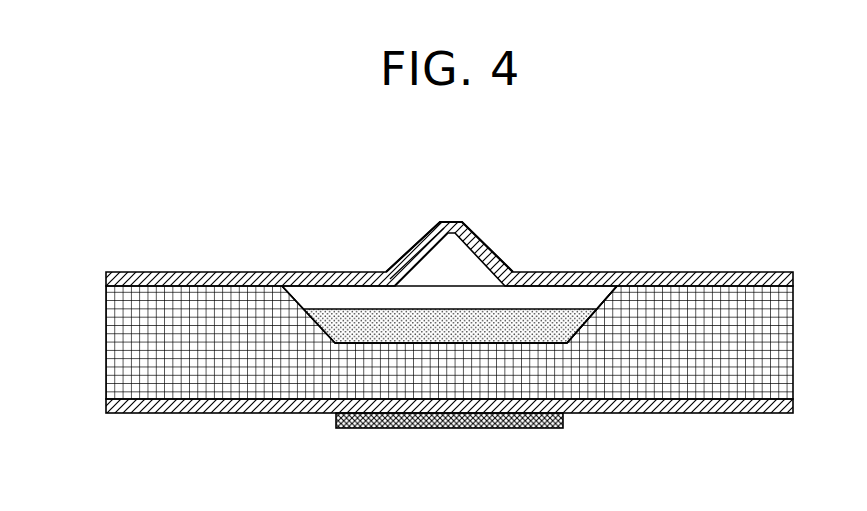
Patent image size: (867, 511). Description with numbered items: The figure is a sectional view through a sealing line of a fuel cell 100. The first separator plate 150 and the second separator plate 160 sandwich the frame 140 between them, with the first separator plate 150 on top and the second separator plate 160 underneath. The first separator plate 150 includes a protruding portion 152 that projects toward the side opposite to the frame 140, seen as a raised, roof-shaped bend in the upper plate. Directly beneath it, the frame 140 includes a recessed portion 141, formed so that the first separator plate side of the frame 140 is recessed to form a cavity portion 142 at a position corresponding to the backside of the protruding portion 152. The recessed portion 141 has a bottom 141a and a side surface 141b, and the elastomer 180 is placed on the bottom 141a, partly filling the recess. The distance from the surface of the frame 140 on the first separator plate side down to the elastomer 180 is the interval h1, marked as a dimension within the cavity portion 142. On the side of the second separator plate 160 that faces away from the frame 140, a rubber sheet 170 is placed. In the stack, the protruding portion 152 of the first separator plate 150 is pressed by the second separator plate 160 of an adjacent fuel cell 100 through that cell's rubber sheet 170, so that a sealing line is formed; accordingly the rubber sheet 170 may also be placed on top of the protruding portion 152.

The fuel cell 100 is at (780, 212).
The frame 140 is at (793, 307).
The recessed portion 141 is at (655, 213).
The bottom 141a is at (531, 343).
The side surface 141b is at (600, 297).
The cavity portion 142 is at (496, 307).
The first separator plate 150 is at (757, 273).
The protruding portion 152 is at (477, 233).
The second separator plate 160 is at (762, 413).
The rubber sheet 170 is at (357, 428).
The elastomer 180 is at (340, 322).
The interval h1 is at (412, 286).